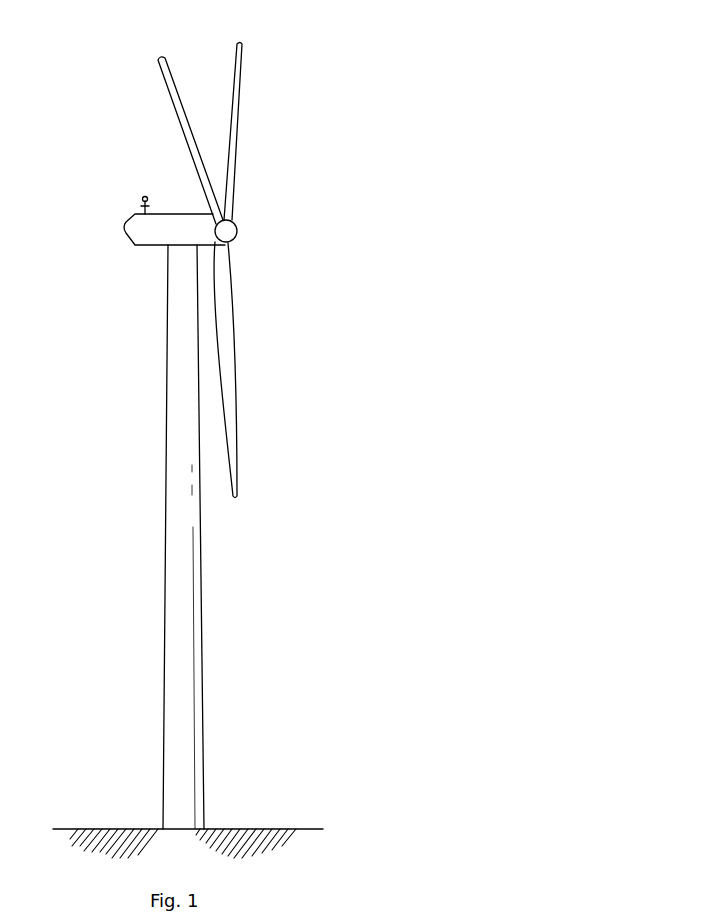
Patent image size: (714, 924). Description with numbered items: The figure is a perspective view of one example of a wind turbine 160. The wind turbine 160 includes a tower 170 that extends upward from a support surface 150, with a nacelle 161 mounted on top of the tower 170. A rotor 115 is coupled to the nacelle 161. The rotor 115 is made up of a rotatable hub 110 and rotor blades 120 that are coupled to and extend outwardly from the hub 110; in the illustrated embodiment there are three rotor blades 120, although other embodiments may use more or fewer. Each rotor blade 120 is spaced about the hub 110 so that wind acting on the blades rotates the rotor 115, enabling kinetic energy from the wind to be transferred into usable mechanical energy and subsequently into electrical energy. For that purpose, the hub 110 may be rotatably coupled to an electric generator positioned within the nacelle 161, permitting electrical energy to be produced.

The hub 110 is at (238, 236).
The rotor 115 is at (239, 205).
The rotor blade 120 is at (232, 73).
The support surface 150 is at (112, 829).
The wind turbine 160 is at (219, 443).
The nacelle 161 is at (152, 247).
The tower 170 is at (173, 617).